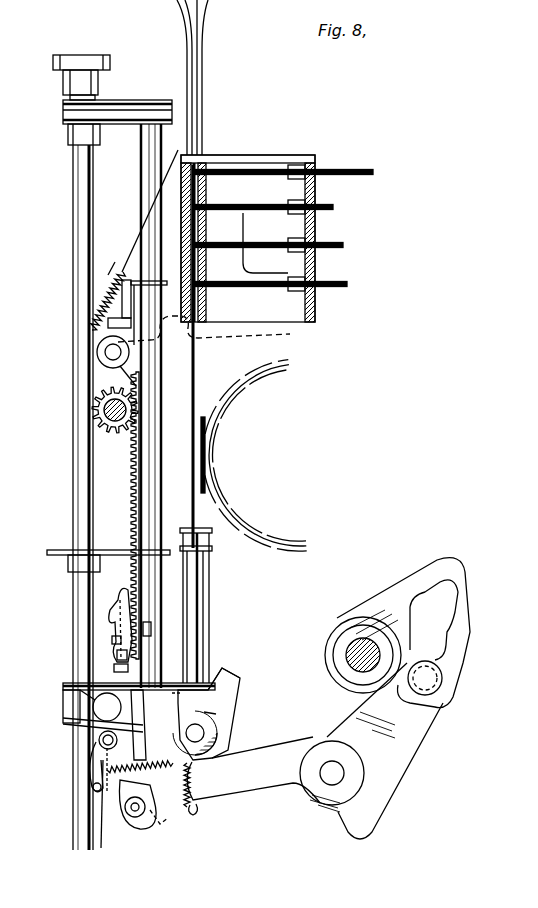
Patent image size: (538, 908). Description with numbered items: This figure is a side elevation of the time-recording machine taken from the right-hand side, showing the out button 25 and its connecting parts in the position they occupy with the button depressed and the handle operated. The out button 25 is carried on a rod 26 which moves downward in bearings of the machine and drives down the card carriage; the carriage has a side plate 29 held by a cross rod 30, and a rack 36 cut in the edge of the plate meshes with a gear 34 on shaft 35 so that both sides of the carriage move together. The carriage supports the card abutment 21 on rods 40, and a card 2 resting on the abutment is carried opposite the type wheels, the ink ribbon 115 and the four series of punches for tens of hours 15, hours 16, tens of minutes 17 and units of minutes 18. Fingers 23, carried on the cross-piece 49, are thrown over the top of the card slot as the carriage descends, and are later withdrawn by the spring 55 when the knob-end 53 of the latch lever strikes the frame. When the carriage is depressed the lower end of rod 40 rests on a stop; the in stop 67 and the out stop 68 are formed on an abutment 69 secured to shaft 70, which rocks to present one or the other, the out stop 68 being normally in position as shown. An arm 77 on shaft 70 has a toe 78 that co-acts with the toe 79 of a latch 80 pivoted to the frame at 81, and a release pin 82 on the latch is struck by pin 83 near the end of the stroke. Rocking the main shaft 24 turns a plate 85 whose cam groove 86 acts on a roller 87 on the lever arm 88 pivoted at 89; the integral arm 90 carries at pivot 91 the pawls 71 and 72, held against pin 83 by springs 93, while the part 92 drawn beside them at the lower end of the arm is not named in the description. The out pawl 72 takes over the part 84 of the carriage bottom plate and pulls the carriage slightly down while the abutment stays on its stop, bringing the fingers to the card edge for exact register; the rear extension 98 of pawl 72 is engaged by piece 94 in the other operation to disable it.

The card 2 is at (196, 362).
The tens of hours punches 15 is at (374, 172).
The hours punches 16 is at (334, 207).
The tens of minutes punches 17 is at (344, 245).
The digits of minutes punches 18 is at (348, 285).
The card abutment 21 is at (186, 520).
The fingers 23 is at (190, 145).
The main shaft 24 is at (360, 645).
The out button 25 is at (82, 58).
The rod 26 is at (73, 191).
The side plate 29 is at (165, 398).
The rod 30 is at (105, 352).
The gears 34 is at (114, 435).
The shaft 35 is at (96, 410).
The racks 36 is at (133, 495).
The rods 40 is at (199, 565).
The cross-piece 49 is at (96, 277).
The knob-end 53 is at (215, 329).
The spring 55 is at (90, 305).
The in stop 67 is at (224, 673).
The out stop 68 is at (210, 684).
The abutment 69 is at (149, 725).
The shaft 70 is at (198, 733).
The pawl 71 is at (126, 606).
The pawl 72 is at (115, 639).
The arm 77 is at (214, 713).
The toe 78 is at (92, 722).
The toe 79 is at (103, 820).
The latch 80 is at (90, 758).
The pivot 81 is at (94, 704).
The release pin 82 is at (99, 740).
The pin 83 is at (106, 746).
The part of bottom plate 84 is at (120, 655).
The plate 85 is at (392, 590).
The cam groove 86 is at (447, 590).
The roller 87 is at (432, 684).
The lever arm 88 is at (396, 730).
The pivot 89 is at (330, 778).
The arm 90 is at (250, 780).
The pivot 91 is at (135, 818).
The pawl 92 is at (152, 812).
The springs 93 is at (191, 784).
The piece 94 is at (112, 665).
The rear extension 98 is at (150, 630).
The ink ribbon 115 is at (206, 425).